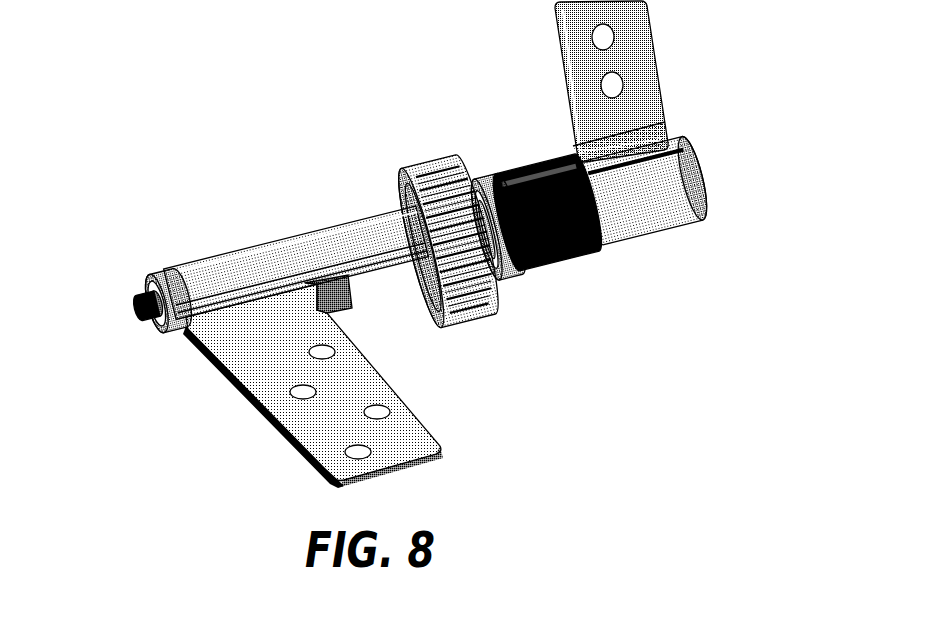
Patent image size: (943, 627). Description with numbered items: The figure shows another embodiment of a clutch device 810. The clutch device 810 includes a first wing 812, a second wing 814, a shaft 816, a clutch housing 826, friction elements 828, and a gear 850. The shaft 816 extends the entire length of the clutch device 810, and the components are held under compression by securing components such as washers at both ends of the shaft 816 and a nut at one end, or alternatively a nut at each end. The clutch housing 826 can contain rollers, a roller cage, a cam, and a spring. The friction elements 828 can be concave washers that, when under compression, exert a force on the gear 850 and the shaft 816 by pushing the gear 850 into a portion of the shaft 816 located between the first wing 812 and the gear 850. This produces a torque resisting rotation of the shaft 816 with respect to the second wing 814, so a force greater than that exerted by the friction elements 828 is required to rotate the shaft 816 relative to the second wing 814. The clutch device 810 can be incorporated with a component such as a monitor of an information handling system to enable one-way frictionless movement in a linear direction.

The clutch device 810 is at (283, 77).
The first wing 812 is at (640, 50).
The second wing 814 is at (418, 432).
The shaft 816 is at (138, 312).
The clutch housing 826 is at (332, 252).
The friction elements 828 is at (505, 285).
The gear 850 is at (402, 194).